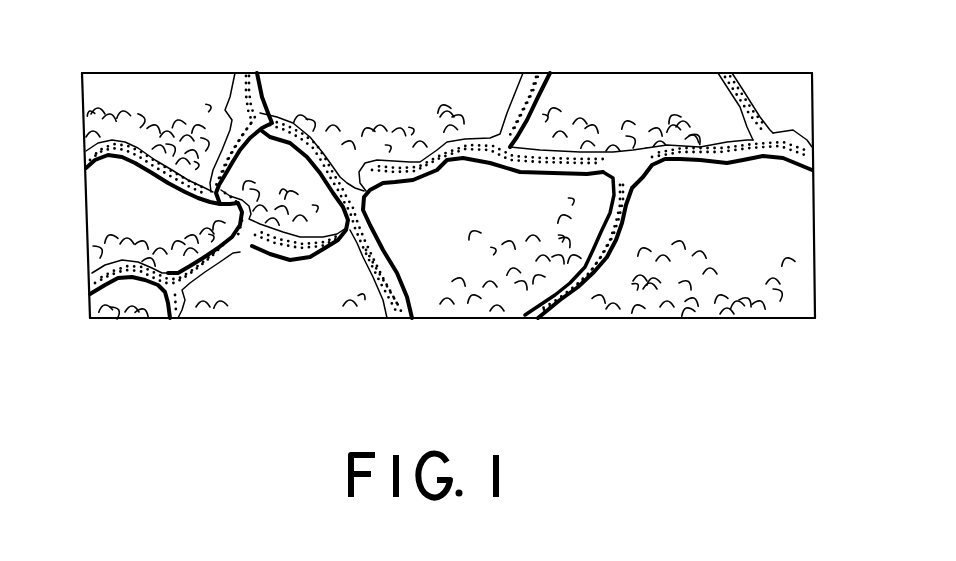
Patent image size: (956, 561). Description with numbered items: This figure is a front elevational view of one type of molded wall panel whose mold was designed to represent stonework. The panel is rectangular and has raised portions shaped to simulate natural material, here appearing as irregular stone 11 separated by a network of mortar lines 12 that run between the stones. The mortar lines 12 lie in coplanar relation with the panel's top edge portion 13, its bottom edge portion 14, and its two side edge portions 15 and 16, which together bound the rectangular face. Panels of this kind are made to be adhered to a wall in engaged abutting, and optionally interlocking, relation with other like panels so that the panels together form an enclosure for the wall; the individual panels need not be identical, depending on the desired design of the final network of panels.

The stone 11 is at (93, 193).
The mortar lines 12 is at (520, 88).
The top edge portion 13 is at (392, 72).
The bottom edge portion 14 is at (467, 300).
The side edge portion 15 is at (817, 217).
The side edge portion 16 is at (87, 228).